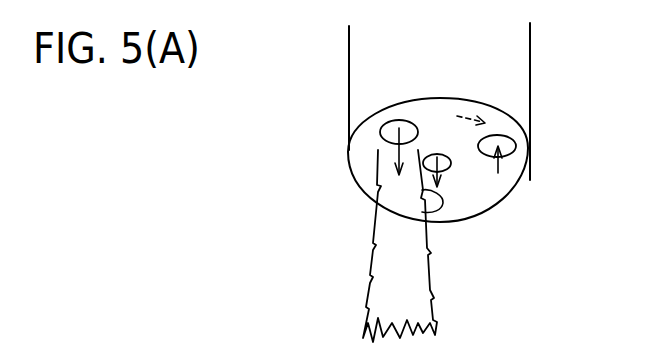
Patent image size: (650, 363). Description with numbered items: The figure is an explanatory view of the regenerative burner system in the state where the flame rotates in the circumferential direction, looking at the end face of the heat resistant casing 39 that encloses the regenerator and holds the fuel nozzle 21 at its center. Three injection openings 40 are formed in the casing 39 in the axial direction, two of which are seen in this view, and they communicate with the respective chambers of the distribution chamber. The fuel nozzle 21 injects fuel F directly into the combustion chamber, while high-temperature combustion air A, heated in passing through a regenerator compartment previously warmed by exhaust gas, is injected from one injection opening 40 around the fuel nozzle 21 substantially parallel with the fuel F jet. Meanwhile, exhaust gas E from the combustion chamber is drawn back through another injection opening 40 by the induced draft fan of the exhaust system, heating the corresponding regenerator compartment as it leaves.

The heat resistant casing 39 is at (520, 77).
The injection openings 40 is at (380, 128).
The fuel nozzle 21 is at (451, 167).
The combustion air A is at (377, 148).
The fuel F is at (450, 168).
The exhaust gas E is at (500, 167).